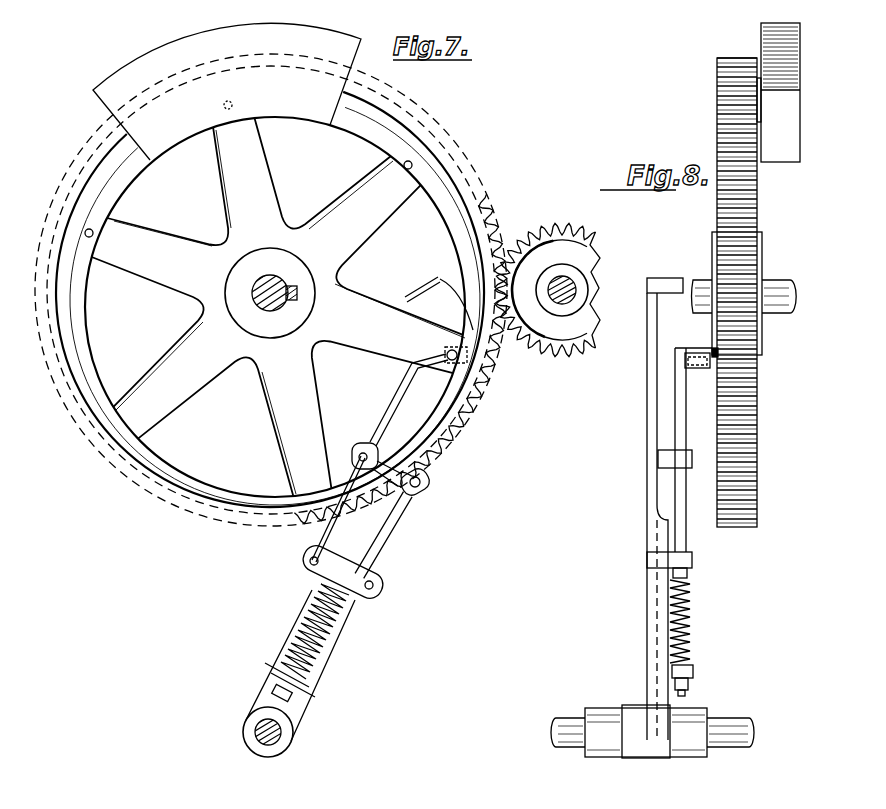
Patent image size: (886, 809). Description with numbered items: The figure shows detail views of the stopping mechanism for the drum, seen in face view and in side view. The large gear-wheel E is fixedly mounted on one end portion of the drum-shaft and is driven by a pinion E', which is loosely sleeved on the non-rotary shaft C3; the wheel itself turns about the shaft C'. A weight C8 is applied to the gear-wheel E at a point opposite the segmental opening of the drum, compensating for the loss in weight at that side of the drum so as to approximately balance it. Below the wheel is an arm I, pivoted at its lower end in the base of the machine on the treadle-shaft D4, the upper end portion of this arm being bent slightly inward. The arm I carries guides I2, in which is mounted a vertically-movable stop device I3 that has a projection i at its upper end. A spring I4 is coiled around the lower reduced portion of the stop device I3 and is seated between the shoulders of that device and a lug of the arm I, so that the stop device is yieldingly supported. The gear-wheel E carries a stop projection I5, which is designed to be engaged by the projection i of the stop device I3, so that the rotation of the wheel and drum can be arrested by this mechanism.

In FIG. 7, the weight C8 is at (227, 91).
In FIG. 8, the weight C8 is at (773, 42).
In FIG. 7, the main wheel shaft C' is at (247, 288).
In FIG. 8, the main wheel shaft C' is at (748, 279).
In FIG. 7, the non-rotary shaft C3 is at (577, 288).
In FIG. 7, the gear-wheel E is at (271, 290).
In FIG. 8, the gear-wheel E is at (747, 292).
In FIG. 7, the pinion E' is at (547, 274).
In FIG. 7, the arm I is at (396, 527).
In FIG. 8, the arm I is at (647, 495).
In FIG. 7, the guides I2 is at (427, 478).
In FIG. 8, the guides I2 is at (662, 557).
In FIG. 7, the stop device I3 is at (338, 536).
In FIG. 8, the stop device I3 is at (682, 421).
In FIG. 7, the spring I4 is at (320, 641).
In FIG. 8, the spring I4 is at (690, 607).
In FIG. 7, the stop projection I5 is at (460, 358).
In FIG. 8, the stop projection I5 is at (700, 348).
In FIG. 7, the projection i is at (414, 368).
In FIG. 8, the projection i is at (700, 369).
In FIG. 7, the treadle-shaft D4 is at (243, 733).
In FIG. 8, the treadle-shaft D4 is at (740, 717).